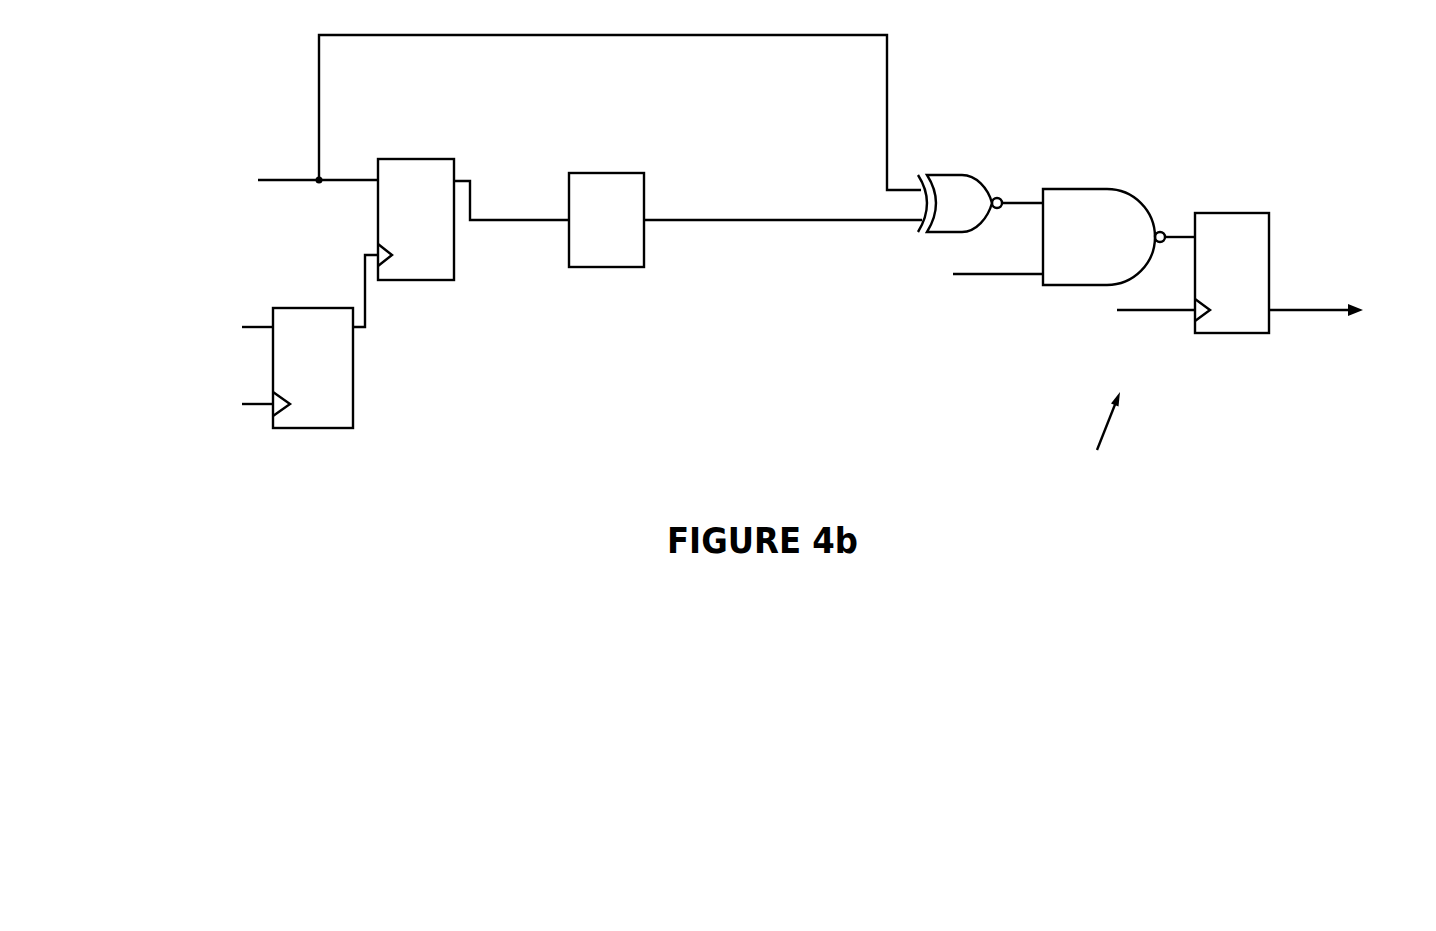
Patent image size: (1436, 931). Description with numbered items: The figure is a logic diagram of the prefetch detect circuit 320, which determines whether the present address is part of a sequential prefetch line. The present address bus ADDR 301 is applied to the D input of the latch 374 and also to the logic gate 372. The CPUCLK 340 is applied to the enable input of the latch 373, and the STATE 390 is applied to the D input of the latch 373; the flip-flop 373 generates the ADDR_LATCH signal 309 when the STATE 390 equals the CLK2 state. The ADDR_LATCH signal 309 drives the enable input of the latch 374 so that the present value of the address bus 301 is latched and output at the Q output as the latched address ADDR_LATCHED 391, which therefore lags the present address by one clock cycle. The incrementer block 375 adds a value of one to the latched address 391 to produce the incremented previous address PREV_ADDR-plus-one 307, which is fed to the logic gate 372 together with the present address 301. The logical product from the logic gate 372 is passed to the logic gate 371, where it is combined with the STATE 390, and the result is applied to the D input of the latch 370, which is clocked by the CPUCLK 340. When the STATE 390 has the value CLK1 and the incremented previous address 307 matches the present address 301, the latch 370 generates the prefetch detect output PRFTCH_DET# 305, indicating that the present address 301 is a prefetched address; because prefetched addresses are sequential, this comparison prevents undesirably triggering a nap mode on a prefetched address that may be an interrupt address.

The ADDR[31:3] 301 is at (297, 178).
The PRFTCH_DET# 305 is at (1312, 308).
The PREV_ADDR[31:3]+1 307 is at (688, 222).
The ADDR_LATCH signal 309 is at (371, 251).
The prefetch detect circuit 320 is at (1093, 442).
The CPUCLK 340 is at (253, 406).
The latch 370 is at (1228, 213).
The logic gate 371 is at (1080, 189).
The logic gate 372 is at (937, 176).
The latch 373 is at (330, 428).
The latch 374 is at (420, 282).
The block 375 is at (620, 268).
The STATE 390 is at (253, 329).
The ADDR_LATCHED[31:3] 391 is at (563, 216).